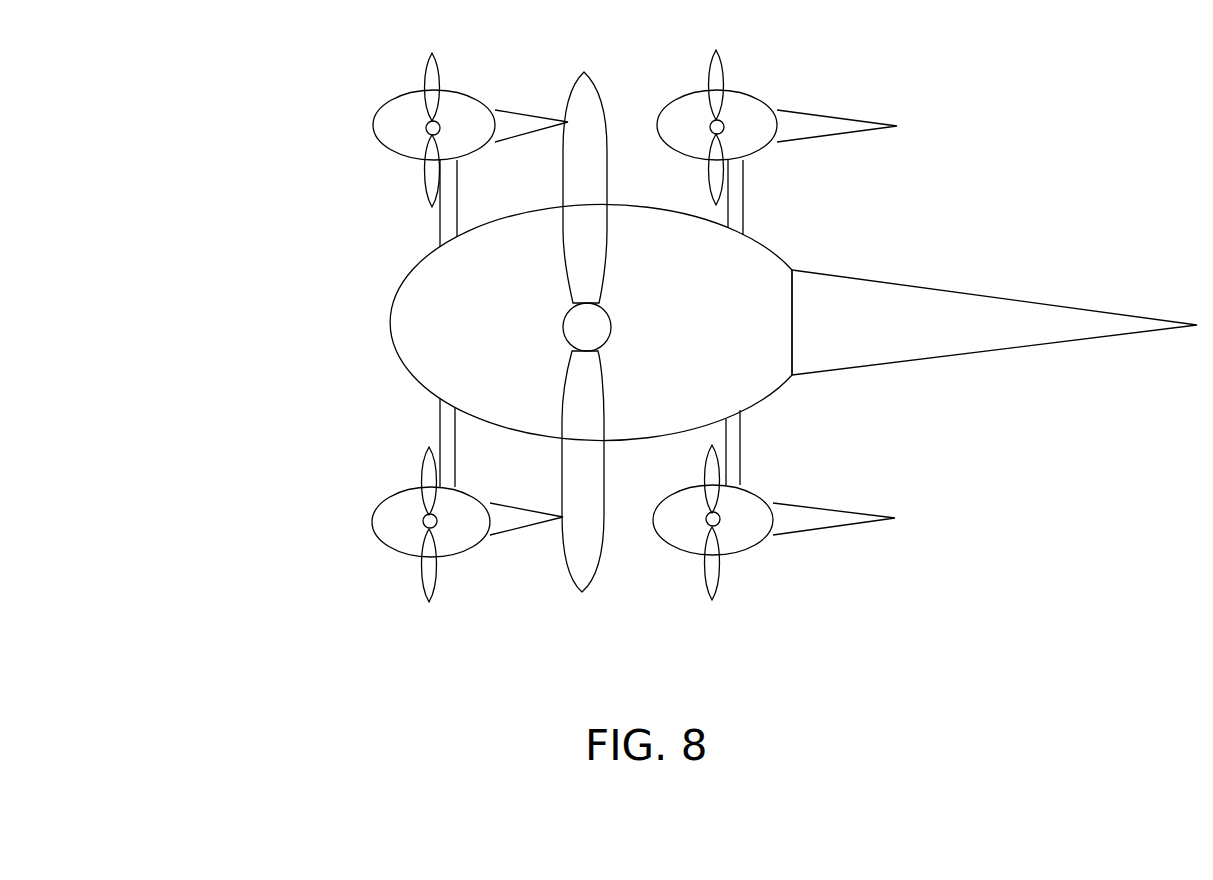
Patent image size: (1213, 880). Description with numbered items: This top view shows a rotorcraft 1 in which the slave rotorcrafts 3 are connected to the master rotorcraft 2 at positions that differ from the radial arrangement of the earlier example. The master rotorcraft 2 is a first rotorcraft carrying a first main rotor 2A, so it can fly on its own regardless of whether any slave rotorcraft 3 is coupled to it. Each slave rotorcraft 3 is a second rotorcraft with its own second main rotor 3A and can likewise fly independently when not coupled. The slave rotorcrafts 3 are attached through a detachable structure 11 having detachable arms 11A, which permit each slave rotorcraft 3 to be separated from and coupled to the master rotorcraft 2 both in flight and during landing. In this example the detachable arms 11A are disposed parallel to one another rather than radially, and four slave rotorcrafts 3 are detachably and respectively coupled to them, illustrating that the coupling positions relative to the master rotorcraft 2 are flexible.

The rotorcraft 1 is at (266, 178).
The master rotorcraft 2 is at (391, 313).
The first main rotor 2A is at (597, 92).
The slave rotorcraft 3 is at (464, 89).
The second main rotor 3A is at (426, 72).
The detachable structure 11 is at (437, 442).
The detachable arm 11A is at (443, 415).